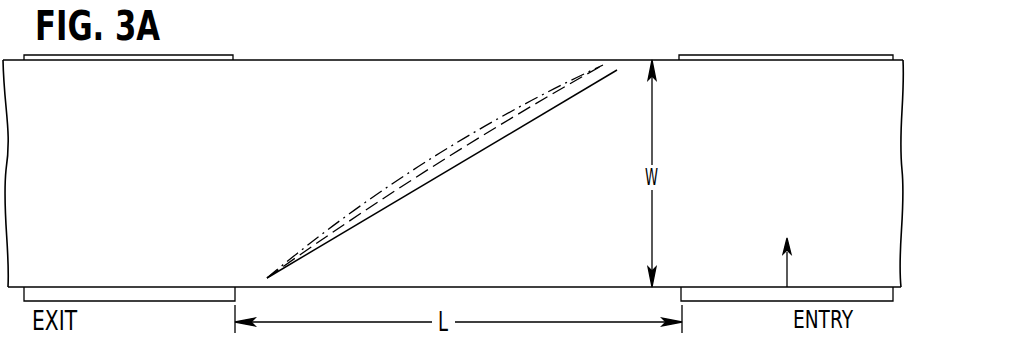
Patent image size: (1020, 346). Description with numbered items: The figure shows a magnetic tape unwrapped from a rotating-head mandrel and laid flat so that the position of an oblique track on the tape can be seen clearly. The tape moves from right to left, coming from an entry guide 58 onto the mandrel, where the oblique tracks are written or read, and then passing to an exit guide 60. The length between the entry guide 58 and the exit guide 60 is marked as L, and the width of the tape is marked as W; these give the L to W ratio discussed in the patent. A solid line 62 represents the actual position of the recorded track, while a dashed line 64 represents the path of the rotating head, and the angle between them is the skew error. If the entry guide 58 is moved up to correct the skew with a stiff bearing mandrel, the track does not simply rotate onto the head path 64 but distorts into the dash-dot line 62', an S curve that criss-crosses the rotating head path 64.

The entry guide 58 is at (722, 293).
The exit guide 60 is at (163, 297).
The solid line (actual track position) 62 is at (442, 174).
The distorted track 62' is at (435, 171).
The dashed line (rotating head path) 64 is at (508, 127).